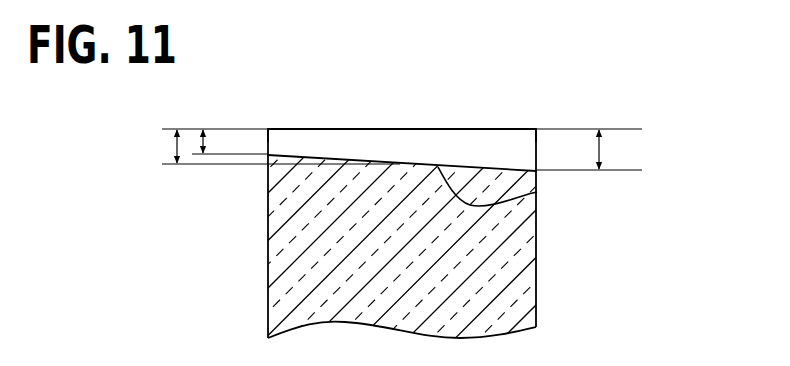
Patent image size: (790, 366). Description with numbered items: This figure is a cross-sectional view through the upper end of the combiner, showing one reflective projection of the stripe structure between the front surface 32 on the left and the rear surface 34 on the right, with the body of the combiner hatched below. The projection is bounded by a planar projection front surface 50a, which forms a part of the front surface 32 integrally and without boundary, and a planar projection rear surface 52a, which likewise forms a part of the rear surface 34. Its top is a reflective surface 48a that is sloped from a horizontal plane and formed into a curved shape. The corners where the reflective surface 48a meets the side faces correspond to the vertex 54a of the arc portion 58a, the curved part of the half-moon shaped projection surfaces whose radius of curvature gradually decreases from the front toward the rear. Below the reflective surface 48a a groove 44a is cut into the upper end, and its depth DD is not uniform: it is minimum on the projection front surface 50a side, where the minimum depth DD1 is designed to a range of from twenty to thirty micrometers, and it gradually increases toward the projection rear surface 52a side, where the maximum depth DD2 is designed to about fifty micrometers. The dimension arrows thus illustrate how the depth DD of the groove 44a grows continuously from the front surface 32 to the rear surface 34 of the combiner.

The front surface 32 is at (268, 258).
The rear surface 34 is at (536, 256).
The groove 44a is at (537, 192).
The reflective surface 48a is at (400, 137).
The projection front surface 50a is at (268, 143).
The projection rear surface 52a is at (536, 142).
The vertex 54a is at (425, 99).
The arc portion 58a is at (268, 129).
The depth of the grooves DD is at (271, 146).
The minimum depth of the grooves DD1 is at (195, 128).
The maximum depth of the grooves DD2 is at (590, 149).